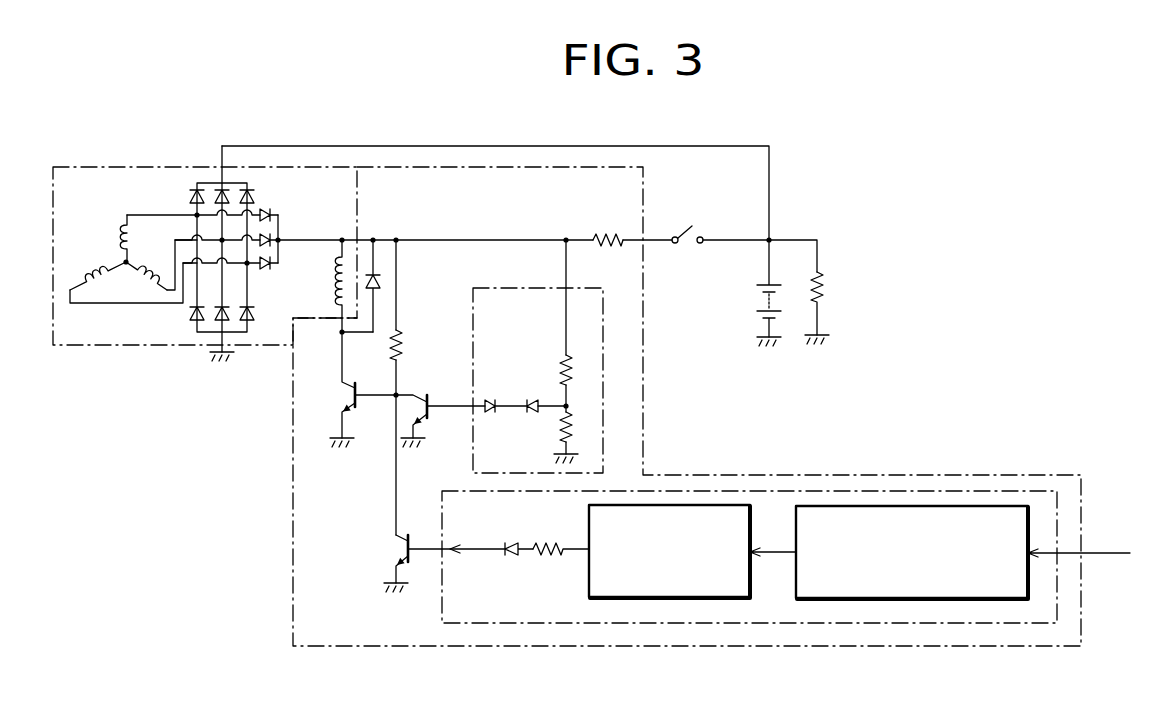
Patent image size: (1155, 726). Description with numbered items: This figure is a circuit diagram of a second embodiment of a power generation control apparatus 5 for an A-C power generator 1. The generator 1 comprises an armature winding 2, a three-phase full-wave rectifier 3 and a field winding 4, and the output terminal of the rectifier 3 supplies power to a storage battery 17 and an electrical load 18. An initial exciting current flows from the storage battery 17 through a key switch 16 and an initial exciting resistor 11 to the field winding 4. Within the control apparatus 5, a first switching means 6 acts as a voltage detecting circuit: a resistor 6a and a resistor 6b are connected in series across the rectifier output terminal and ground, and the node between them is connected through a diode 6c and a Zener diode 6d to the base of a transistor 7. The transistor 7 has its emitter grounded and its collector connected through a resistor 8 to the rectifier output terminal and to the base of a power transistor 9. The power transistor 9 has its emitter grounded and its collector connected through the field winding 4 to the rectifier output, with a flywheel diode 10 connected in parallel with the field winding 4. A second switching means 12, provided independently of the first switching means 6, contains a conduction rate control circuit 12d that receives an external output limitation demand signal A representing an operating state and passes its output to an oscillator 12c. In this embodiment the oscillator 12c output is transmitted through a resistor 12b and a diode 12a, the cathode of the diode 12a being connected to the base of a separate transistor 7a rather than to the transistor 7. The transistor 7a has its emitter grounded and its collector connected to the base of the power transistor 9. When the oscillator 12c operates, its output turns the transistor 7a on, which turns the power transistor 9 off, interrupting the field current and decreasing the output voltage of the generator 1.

The A-C power generator 1 is at (96, 347).
The armature winding 2 is at (120, 248).
The three-phase full-wave rectifier 3 is at (192, 318).
The field winding 4 is at (336, 290).
The power generation control apparatus 5 is at (292, 583).
The first switching means 6 is at (603, 397).
The resistor 6a is at (565, 362).
The resistor 6b is at (562, 437).
The diode 6c is at (528, 400).
The Zener diode 6d is at (490, 414).
The transistor 7 is at (425, 392).
The transistor 7a is at (395, 547).
The resistor 8 is at (400, 336).
The power transistor 9 is at (350, 388).
The flywheel diode 10 is at (380, 280).
The initial exciting resistor 11 is at (607, 232).
The second switching means 12 is at (697, 623).
The diode 12a is at (510, 556).
The resistor 12b is at (550, 557).
The oscillator 12c is at (738, 598).
The conduction rate control circuit 12d is at (992, 599).
The key switch 16 is at (682, 226).
The storage battery 17 is at (757, 302).
The electrical load 18 is at (825, 283).
The output limitation demand signal A is at (1107, 558).